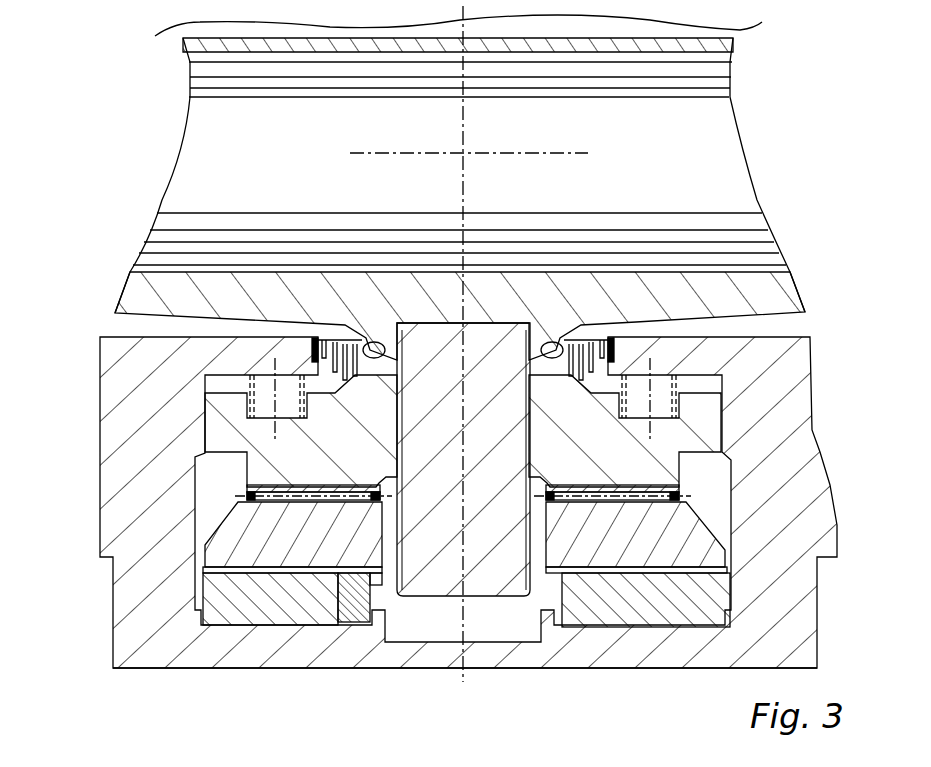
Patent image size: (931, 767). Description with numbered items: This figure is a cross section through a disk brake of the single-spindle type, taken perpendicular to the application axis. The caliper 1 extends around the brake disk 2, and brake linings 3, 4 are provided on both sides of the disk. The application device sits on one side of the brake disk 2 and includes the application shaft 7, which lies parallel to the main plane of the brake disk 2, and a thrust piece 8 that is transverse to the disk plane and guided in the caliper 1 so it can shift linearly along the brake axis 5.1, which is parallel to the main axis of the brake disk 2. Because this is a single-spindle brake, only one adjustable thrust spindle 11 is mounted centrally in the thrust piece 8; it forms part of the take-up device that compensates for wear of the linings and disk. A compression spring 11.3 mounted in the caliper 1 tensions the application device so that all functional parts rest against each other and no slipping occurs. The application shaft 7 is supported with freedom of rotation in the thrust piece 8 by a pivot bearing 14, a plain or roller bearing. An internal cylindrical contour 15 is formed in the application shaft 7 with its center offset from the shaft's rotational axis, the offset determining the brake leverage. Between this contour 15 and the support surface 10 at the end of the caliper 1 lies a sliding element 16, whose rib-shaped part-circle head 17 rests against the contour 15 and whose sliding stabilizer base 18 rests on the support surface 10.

The caliper 1 is at (813, 377).
The brake disk 2 is at (749, 146).
The brake lining 3 is at (779, 229).
The brake lining 4 is at (735, 66).
The brake axis 5.1 is at (468, 673).
The application shaft 7 is at (677, 530).
The thrust piece 8 is at (703, 433).
The support surface 10 is at (267, 633).
The thrust spindle 11 is at (445, 585).
The compression spring 11.3 is at (247, 404).
The pivot bearing 14 is at (246, 489).
The internal cylindrical contour 15 is at (223, 570).
The sliding element 16 is at (227, 608).
The part-circle head 17 is at (340, 583).
The sliding stabilizer base 18 is at (313, 612).